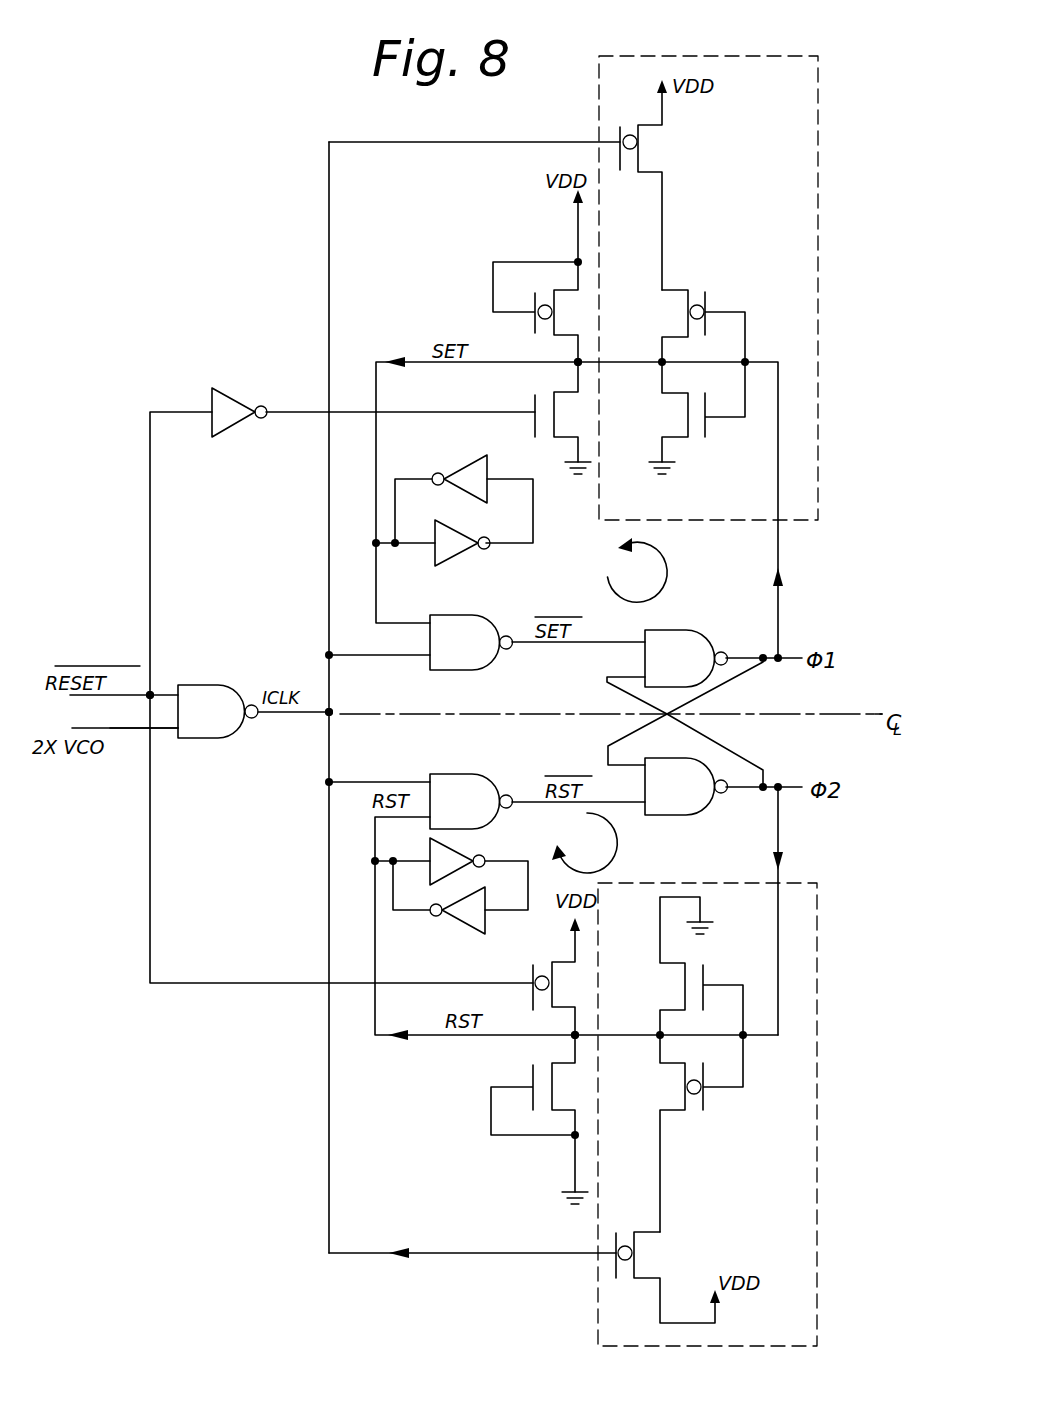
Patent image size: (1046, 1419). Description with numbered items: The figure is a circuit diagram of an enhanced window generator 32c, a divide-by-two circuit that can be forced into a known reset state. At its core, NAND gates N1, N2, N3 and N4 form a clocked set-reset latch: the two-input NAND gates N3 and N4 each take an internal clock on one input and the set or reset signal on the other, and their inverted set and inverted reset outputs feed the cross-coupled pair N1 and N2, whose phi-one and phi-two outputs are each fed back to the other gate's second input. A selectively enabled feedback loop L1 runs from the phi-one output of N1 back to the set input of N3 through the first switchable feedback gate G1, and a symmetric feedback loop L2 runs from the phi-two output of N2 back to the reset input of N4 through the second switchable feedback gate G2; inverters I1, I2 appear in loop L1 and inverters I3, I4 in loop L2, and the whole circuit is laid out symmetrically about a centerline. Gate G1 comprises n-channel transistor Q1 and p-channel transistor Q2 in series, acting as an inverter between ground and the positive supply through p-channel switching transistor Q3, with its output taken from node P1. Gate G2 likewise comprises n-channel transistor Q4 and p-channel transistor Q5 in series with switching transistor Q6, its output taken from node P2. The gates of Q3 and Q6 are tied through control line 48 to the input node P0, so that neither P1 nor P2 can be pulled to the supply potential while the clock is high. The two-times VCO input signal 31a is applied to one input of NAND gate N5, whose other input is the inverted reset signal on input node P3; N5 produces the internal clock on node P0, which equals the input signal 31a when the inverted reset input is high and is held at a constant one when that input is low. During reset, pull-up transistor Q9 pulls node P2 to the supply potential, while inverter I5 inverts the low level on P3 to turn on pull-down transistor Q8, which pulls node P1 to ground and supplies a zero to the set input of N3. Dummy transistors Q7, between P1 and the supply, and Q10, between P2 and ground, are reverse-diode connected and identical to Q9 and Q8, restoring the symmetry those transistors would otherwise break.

The enhanced window generator 32c is at (222, 232).
The control line 48 is at (329, 1034).
The 2x VCO input signal 31a is at (110, 760).
The first switchable feedback gate G1 is at (818, 235).
The second switchable feedback gate G2 is at (817, 1060).
The n-channel transistor Q1 is at (688, 418).
The p-channel transistor Q2 is at (687, 322).
The p-channel switching transistor Q3 is at (661, 191).
The n-channel transistor Q4 is at (687, 966).
The p-channel transistor Q5 is at (687, 1133).
The switching transistor Q6 is at (665, 1277).
The dummy transistor Q7 is at (543, 282).
The pull-down transistor Q8 is at (564, 418).
The pull-up transistor Q9 is at (563, 982).
The dummy transistor Q10 is at (549, 1119).
The NAND gate N1 is at (687, 630).
The NAND gate N2 is at (690, 815).
The two-input NAND gate N3 is at (475, 670).
The two-input NAND gate N4 is at (478, 829).
The NAND gate N5 is at (215, 738).
The inverter I1 is at (487, 475).
The inverter I2 is at (437, 562).
The inverter I3 is at (430, 845).
The inverter I4 is at (485, 928).
The inverter I5 is at (238, 432).
The 2x VCO input node P0 is at (329, 712).
The node P1 is at (582, 361).
The node P2 is at (579, 1034).
The input node P3 is at (150, 695).
The feedback loop L1 is at (638, 570).
The feedback loop L2 is at (584, 843).